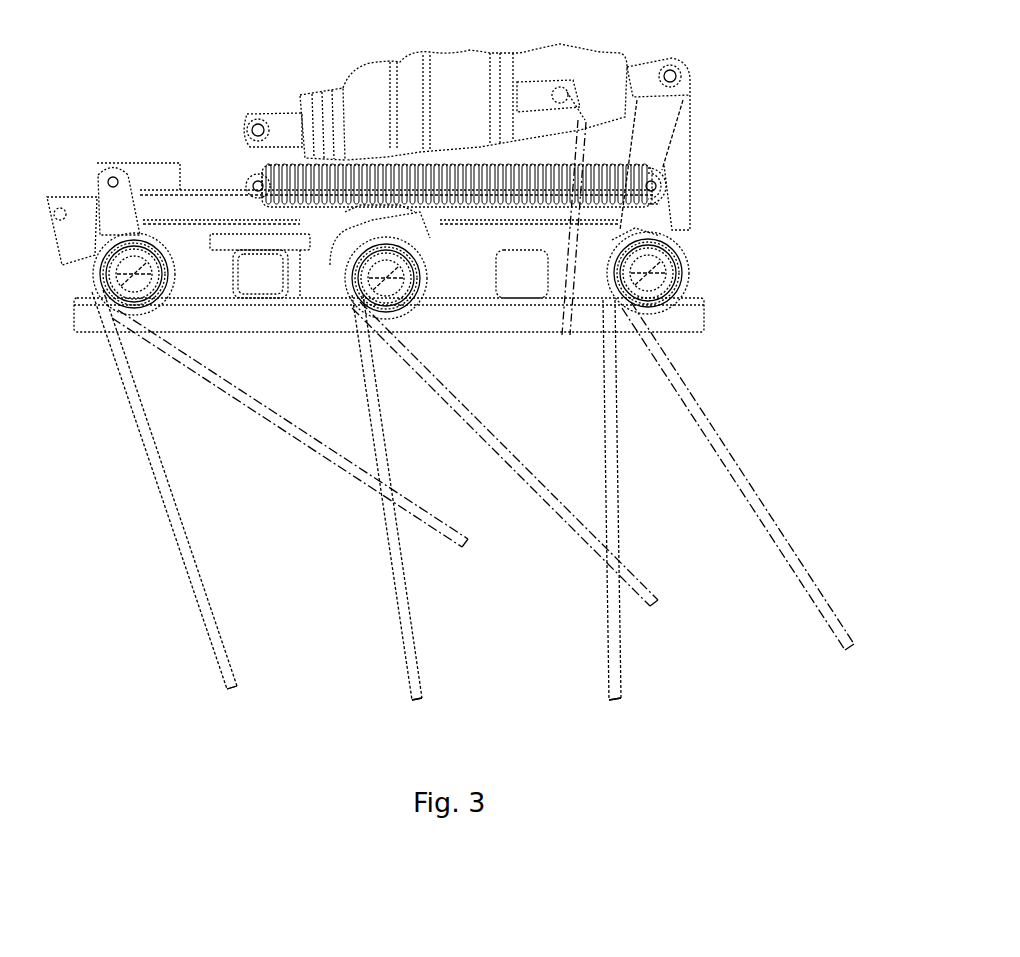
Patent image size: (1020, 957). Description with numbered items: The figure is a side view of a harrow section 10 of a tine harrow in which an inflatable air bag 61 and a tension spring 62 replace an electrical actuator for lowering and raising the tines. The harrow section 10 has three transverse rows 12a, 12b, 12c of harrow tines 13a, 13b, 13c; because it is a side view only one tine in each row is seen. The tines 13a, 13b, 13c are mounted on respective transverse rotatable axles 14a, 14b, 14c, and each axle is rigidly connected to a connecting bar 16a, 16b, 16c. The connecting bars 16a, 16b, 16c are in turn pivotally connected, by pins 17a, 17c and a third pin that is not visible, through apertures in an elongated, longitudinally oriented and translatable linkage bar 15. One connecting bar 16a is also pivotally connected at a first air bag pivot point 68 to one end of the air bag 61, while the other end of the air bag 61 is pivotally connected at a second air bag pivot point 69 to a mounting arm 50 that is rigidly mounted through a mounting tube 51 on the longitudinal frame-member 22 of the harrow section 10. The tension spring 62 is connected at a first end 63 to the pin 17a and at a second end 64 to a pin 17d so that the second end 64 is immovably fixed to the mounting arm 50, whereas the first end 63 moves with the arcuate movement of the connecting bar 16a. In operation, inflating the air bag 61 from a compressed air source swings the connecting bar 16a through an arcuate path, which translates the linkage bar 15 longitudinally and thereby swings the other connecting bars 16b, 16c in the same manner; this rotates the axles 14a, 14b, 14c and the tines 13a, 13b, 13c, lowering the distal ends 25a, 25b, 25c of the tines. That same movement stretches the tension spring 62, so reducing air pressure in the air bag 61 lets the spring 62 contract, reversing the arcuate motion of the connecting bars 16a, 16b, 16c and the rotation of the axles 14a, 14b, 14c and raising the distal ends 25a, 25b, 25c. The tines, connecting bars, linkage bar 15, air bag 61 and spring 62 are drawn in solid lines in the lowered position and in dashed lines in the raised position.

The harrow section 10 is at (748, 318).
The transverse row of harrow tines 12a is at (672, 280).
The transverse row of harrow tines 12b is at (390, 288).
The transverse row of harrow tines 12c is at (134, 280).
The harrow tine 13a is at (610, 484).
The harrow tine 13b is at (398, 560).
The harrow tine 13c is at (155, 461).
The transverse rotatable axle 14a is at (670, 252).
The transverse rotatable axle 14b is at (400, 270).
The transverse rotatable axle 14c is at (120, 274).
The linkage bar 15 is at (137, 170).
The connecting bar 16a is at (680, 120).
The connecting bar 16b is at (393, 213).
The connecting bar 16c is at (110, 203).
The pin 17a is at (656, 182).
The pin 17c is at (112, 177).
The pin 17d is at (352, 165).
The longitudinal frame-member 22 is at (690, 330).
The distal end of tine 25a is at (615, 700).
The distal end of tine 25b is at (417, 700).
The distal end of tine 25c is at (232, 690).
The mounting arm 50 is at (323, 172).
The mounting tube 51 is at (278, 303).
The inflatable air bag 61 is at (525, 58).
The tension spring 62 is at (562, 300).
The first end of spring 63 is at (665, 200).
The second end of spring 64 is at (248, 183).
The first air bag pivot point 68 is at (675, 72).
The second air bag pivot point 69 is at (259, 126).